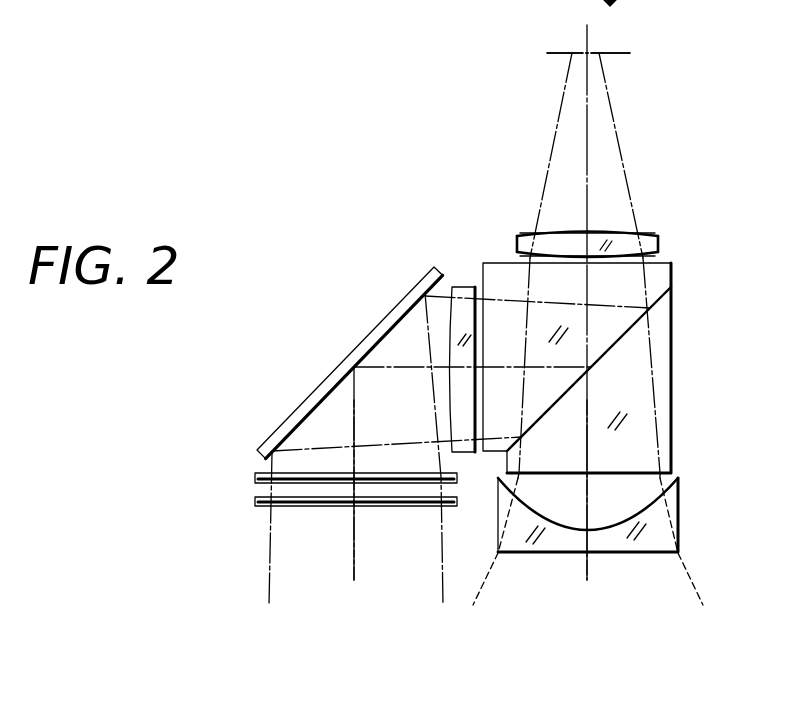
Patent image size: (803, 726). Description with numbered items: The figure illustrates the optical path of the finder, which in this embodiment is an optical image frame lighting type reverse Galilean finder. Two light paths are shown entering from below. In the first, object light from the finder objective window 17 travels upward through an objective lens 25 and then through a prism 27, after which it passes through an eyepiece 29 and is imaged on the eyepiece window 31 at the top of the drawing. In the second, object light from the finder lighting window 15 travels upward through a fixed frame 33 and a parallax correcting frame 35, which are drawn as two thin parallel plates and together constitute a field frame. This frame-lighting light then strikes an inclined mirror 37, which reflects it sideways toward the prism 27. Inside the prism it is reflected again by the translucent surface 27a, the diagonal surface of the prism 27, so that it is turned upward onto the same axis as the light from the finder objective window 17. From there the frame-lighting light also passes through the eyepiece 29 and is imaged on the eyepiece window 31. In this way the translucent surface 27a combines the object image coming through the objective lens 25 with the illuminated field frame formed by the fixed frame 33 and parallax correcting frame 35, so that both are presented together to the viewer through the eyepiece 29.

The finder lighting window 15 is at (355, 598).
The finder objective window 17 is at (589, 600).
The objective lens 25 is at (663, 534).
The prism 27 is at (663, 374).
The translucent surface 27a is at (662, 291).
The eyepiece 29 is at (652, 240).
The eyepiece window 31 is at (603, 44).
The fixed frame 33 is at (259, 504).
The parallax correcting frame 35 is at (256, 476).
The mirror 37 is at (405, 301).